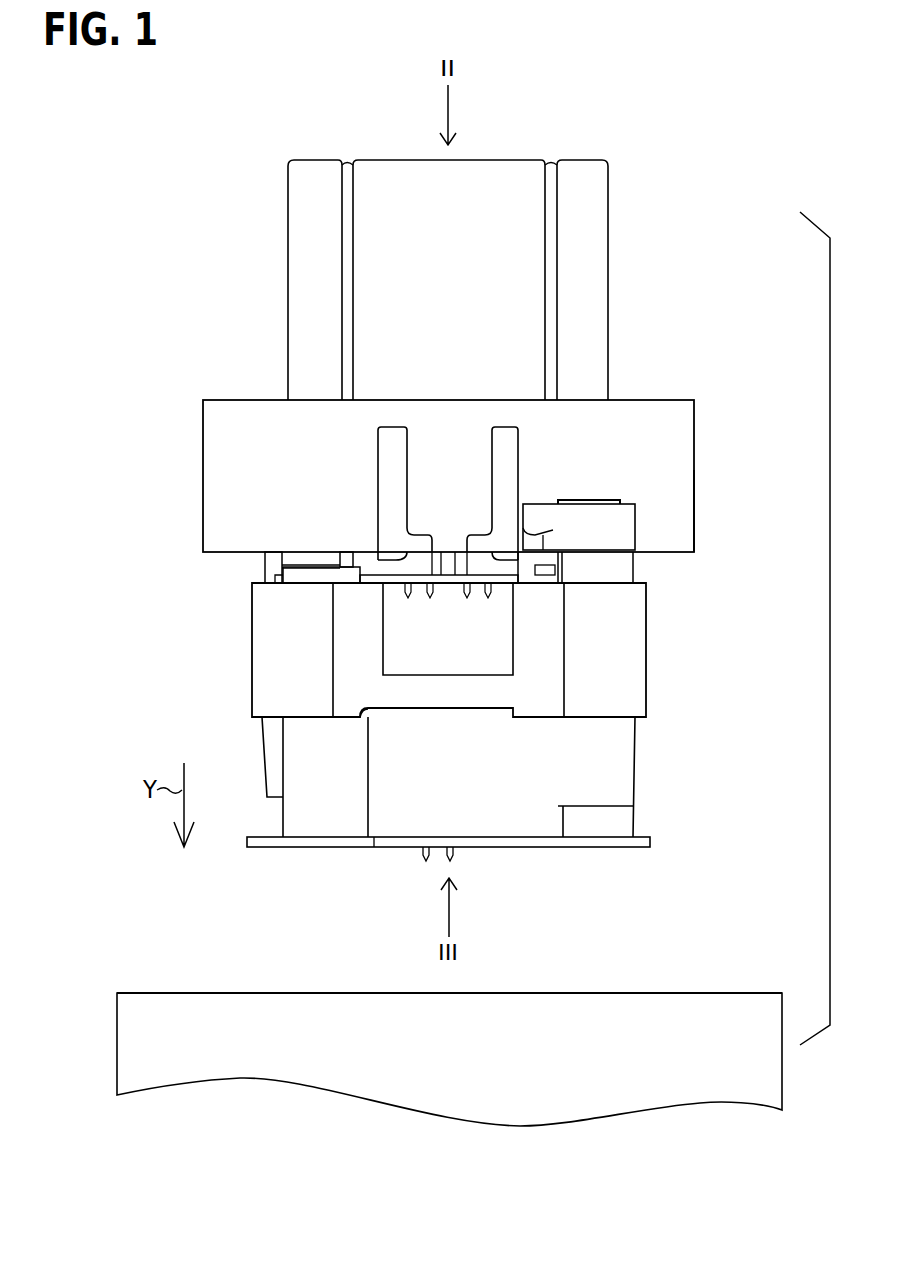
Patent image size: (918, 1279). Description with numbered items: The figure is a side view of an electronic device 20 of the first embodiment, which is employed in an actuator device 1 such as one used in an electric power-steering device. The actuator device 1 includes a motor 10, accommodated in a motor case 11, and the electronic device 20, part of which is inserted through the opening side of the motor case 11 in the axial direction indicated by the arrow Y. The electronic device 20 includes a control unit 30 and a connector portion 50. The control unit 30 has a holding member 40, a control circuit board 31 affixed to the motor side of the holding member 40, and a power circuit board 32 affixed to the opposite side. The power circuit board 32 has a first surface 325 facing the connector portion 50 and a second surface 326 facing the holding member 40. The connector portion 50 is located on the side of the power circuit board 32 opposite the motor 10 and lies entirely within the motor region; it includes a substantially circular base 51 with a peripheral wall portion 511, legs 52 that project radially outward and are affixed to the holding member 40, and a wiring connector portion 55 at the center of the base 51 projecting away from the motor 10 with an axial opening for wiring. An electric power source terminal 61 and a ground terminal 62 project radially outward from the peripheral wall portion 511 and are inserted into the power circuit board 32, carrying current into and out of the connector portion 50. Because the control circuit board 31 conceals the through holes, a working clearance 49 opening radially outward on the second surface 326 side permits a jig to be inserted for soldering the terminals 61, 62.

The actuator device 1 is at (151, 1134).
The motor 10 is at (103, 1042).
The motor case 11 is at (755, 1015).
The electronic device 20 is at (690, 189).
The control unit 30 is at (664, 664).
The control circuit board 31 is at (655, 841).
The power circuit board 32 is at (505, 588).
The first surface 325 is at (365, 562).
The second surface 326 is at (392, 585).
The holding member 40 is at (613, 752).
The working clearance 49 is at (513, 616).
The connector portion 50 is at (711, 451).
The base 51 is at (688, 478).
The peripheral wall portion 511 is at (688, 508).
The legs 52 is at (625, 538).
The wiring connector portion 55 is at (585, 275).
The electric power source terminal 61 is at (510, 440).
The ground terminal 62 is at (390, 440).